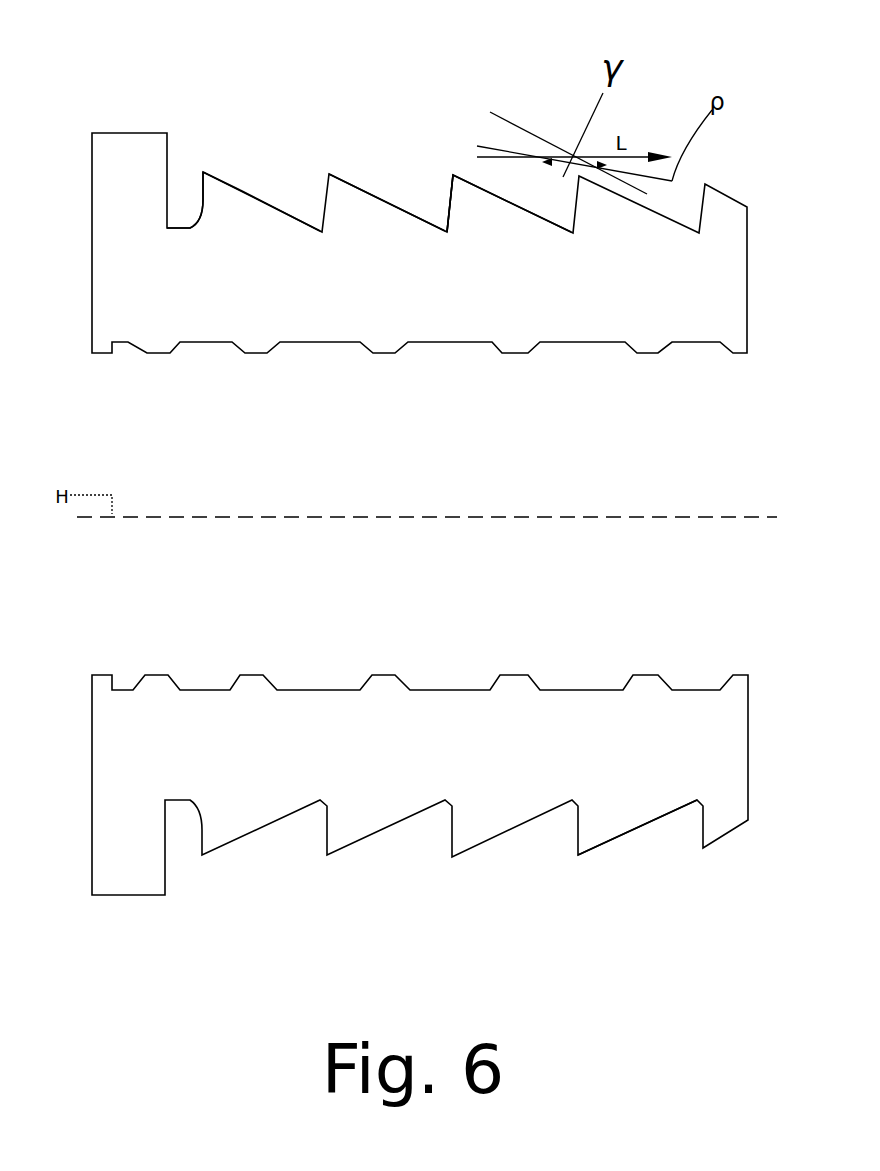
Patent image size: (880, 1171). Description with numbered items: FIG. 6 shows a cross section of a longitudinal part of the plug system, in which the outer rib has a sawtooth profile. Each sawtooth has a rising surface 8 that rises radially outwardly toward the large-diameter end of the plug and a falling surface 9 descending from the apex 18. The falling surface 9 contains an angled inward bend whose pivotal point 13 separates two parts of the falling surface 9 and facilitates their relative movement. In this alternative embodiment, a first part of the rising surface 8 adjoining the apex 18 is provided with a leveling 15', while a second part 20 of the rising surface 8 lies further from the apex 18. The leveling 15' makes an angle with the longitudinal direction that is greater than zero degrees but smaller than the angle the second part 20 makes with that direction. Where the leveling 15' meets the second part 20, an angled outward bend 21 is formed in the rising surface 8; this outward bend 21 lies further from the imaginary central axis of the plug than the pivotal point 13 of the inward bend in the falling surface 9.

The rising surface 8 is at (298, 134).
The falling surface 9 is at (437, 168).
The pivotal point 13 is at (453, 210).
The leveling 15' is at (224, 138).
The apex 18 is at (203, 172).
The second part of the rising surface 20 is at (267, 193).
The angled outward bend 21 is at (363, 183).